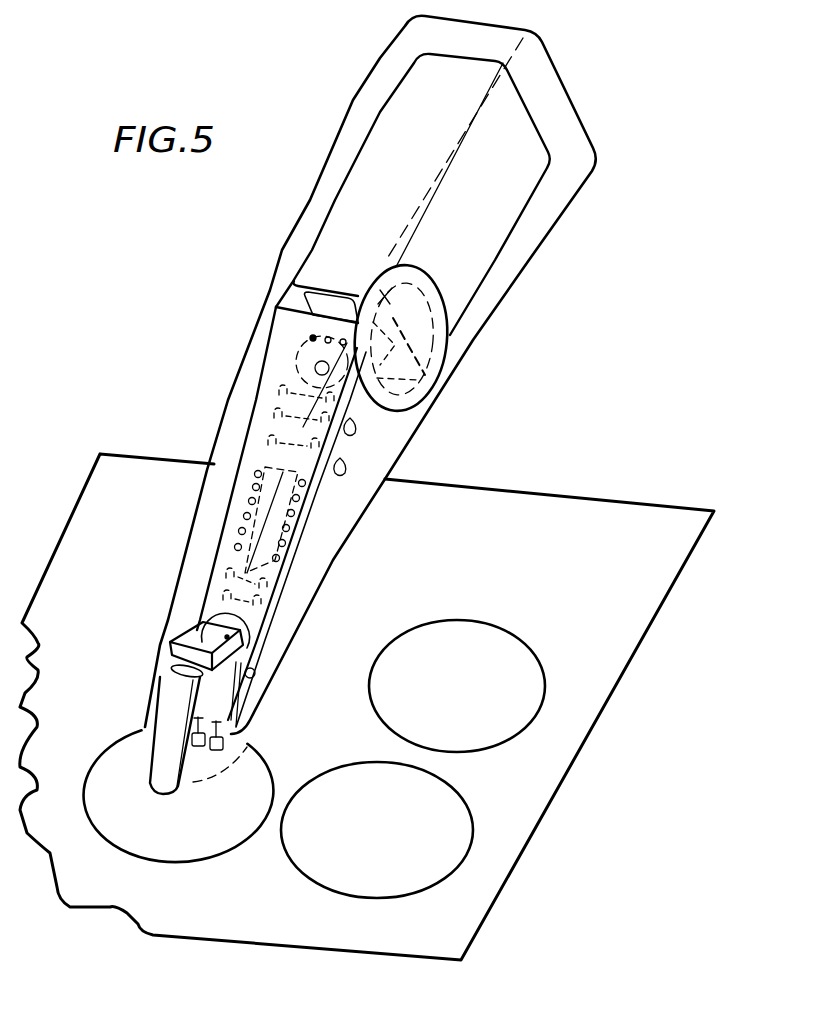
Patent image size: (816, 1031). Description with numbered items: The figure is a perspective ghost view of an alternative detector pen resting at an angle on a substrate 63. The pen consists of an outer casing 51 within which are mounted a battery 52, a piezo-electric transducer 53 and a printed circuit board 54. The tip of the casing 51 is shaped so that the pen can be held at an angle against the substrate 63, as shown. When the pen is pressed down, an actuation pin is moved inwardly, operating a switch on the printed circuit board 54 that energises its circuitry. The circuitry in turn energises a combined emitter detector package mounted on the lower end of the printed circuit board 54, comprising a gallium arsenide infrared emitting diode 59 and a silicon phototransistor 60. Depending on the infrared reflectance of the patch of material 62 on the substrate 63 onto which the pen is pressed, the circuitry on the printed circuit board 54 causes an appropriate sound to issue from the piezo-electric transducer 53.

The outer casing 51 is at (360, 113).
The battery 52 is at (515, 202).
The piezo-electric transducer 53 is at (436, 386).
The printed circuit board 54 is at (277, 368).
The gallium arsenide infrared emitting diode 59 is at (190, 782).
The silicon phototransistor 60 is at (233, 733).
The patch of material 62 is at (102, 762).
The substrate 63 is at (128, 589).